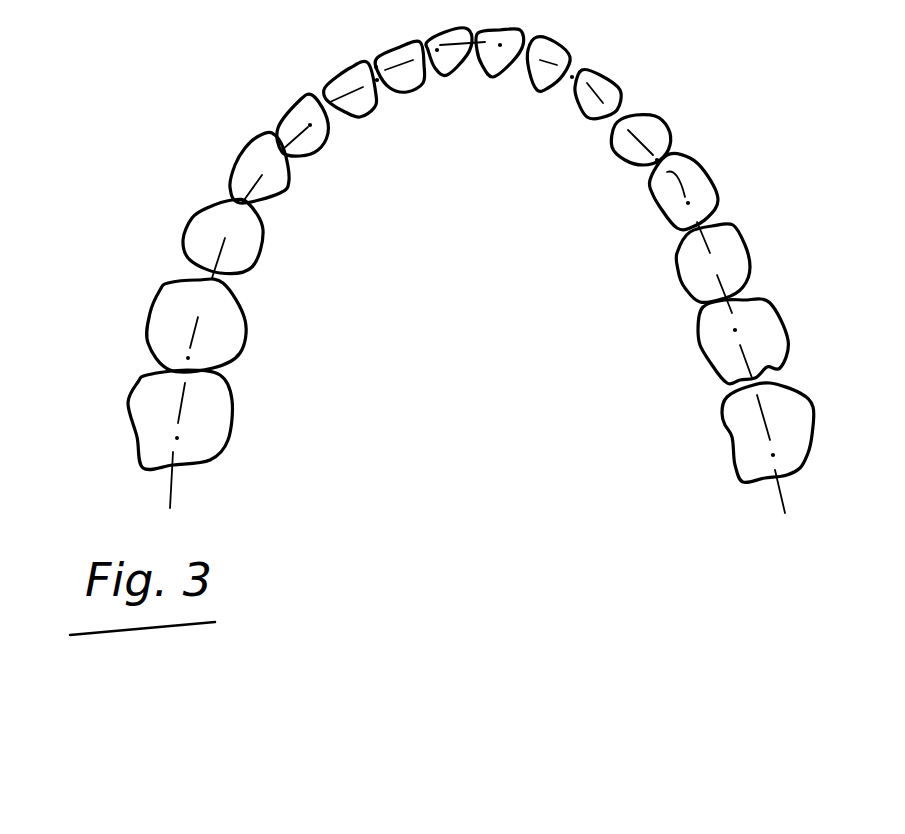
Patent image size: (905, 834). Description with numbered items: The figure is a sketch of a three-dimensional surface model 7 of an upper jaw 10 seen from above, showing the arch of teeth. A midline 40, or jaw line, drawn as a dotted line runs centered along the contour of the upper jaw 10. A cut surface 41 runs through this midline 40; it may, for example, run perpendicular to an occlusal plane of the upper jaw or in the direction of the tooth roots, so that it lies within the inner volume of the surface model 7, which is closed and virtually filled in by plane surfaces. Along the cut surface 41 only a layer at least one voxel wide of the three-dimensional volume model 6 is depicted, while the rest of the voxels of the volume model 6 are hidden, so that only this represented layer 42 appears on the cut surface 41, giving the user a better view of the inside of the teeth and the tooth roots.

The 3D volume model 6 is at (213, 217).
The 3D surface model 7 is at (227, 450).
The upper jaw 10 is at (253, 335).
The midline 40 is at (175, 490).
The cut surface 41 is at (195, 332).
The represented layer 42 is at (223, 238).